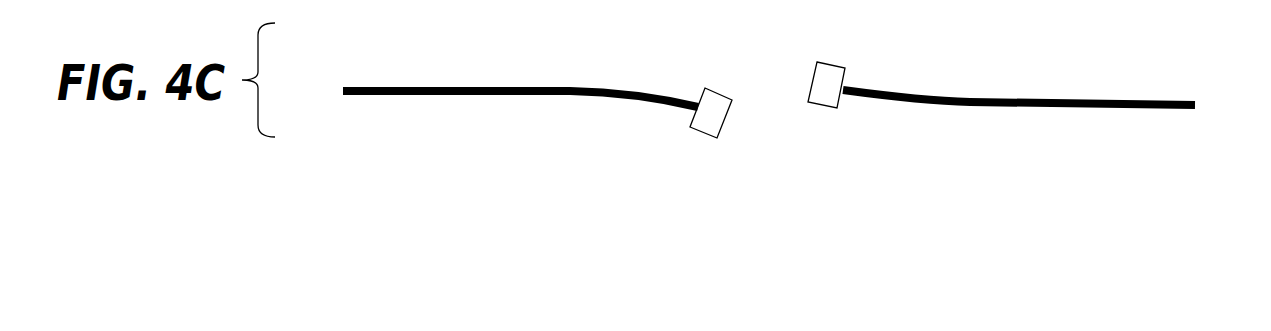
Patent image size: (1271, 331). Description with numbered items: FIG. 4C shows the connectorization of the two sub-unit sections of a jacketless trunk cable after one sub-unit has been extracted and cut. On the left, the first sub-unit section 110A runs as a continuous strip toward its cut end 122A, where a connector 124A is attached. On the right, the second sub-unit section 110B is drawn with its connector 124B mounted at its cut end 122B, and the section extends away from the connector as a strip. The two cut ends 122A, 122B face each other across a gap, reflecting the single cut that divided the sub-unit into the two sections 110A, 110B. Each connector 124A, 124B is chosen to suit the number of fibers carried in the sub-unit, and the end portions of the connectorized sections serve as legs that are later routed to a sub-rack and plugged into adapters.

The sub-unit section 110A is at (493, 86).
The cut end 122A is at (693, 100).
The connector 124A is at (722, 88).
The sub-unit section 110B is at (1042, 100).
The cut end 122B is at (847, 96).
The connector 124B is at (822, 106).